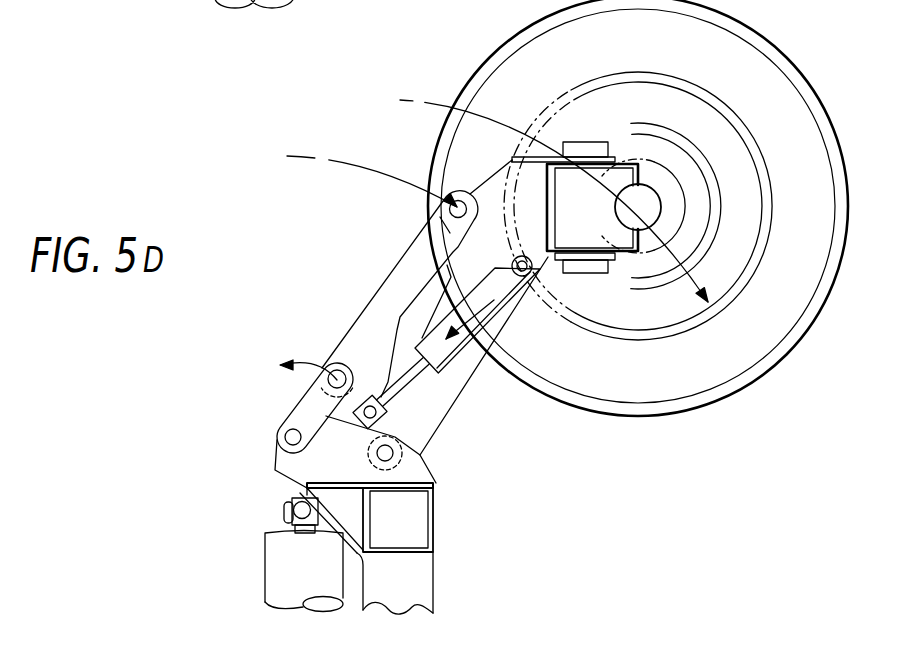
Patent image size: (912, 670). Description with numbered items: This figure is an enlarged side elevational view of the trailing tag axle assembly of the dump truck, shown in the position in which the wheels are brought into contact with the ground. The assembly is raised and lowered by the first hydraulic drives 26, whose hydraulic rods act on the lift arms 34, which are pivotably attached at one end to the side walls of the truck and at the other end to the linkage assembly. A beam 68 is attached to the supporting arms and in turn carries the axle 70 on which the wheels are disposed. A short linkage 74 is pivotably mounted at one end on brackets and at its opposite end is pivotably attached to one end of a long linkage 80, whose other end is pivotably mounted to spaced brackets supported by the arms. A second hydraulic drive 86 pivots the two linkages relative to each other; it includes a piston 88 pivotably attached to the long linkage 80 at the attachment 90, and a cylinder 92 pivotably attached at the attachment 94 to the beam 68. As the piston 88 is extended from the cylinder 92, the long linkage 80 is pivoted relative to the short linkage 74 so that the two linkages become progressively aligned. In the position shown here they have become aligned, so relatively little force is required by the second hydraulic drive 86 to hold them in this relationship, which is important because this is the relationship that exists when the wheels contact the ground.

The first hydraulic drives 26 is at (265, 563).
The lift arms 34 is at (428, 580).
The beam 68 is at (623, 160).
The axle 70 is at (653, 203).
The short linkage 74 is at (303, 405).
The long linkage 80 is at (398, 266).
The second hydraulic drive 86 is at (452, 374).
The piston 88 is at (410, 394).
The pivotal attachment of piston to long linkage 90 is at (358, 418).
The cylinder 92 is at (492, 276).
The pivotal attachment of cylinder to beam 94 is at (531, 262).